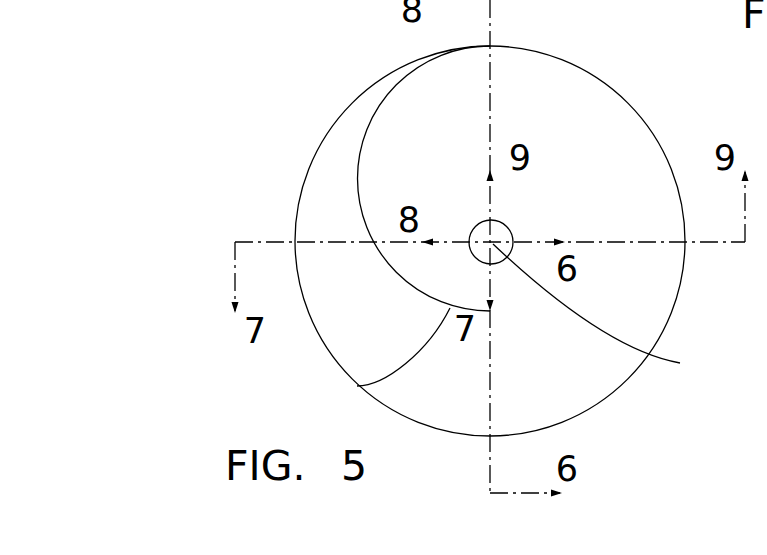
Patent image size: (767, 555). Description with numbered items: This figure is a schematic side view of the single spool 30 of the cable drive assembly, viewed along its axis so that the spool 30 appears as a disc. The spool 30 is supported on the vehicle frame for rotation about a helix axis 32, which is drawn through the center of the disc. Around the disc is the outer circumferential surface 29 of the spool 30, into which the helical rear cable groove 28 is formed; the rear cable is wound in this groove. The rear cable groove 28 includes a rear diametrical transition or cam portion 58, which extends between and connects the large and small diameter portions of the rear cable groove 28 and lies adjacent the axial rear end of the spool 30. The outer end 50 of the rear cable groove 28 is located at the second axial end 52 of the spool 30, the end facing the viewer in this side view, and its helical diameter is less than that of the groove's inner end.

The helical rear cable groove 28 is at (352, 178).
The rear diametrical transition or cam portion 58 is at (372, 120).
The outer circumferential surface 29 is at (640, 110).
The spool 30 is at (531, 225).
The helix axis 32 is at (603, 310).
The outer end of the rear cable groove 50 is at (357, 386).
The second axial end 52 is at (607, 175).